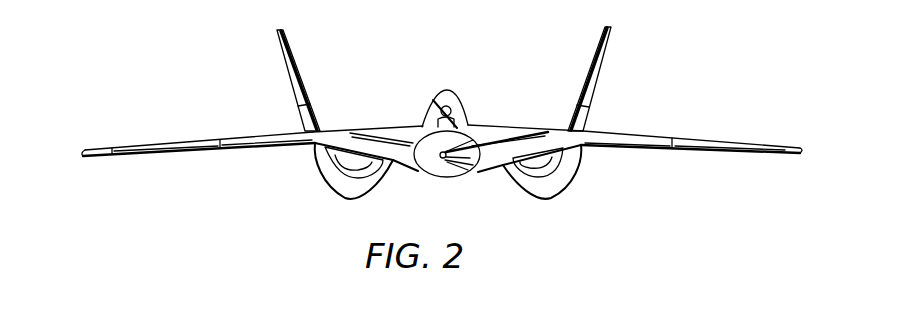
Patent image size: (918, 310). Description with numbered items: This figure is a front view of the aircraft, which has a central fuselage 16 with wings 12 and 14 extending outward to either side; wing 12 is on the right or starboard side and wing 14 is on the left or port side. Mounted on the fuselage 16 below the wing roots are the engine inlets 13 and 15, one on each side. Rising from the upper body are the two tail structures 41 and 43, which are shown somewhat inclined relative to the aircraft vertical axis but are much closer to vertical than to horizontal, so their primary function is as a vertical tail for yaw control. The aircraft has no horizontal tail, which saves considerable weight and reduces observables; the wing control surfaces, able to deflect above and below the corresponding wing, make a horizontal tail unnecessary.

The wing 12 is at (175, 144).
The engine inlet 13 is at (318, 178).
The wing 14 is at (712, 138).
The engine inlet 15 is at (575, 185).
The fuselage 16 is at (501, 131).
The tail structure 41 is at (308, 88).
The tail structure 43 is at (598, 77).